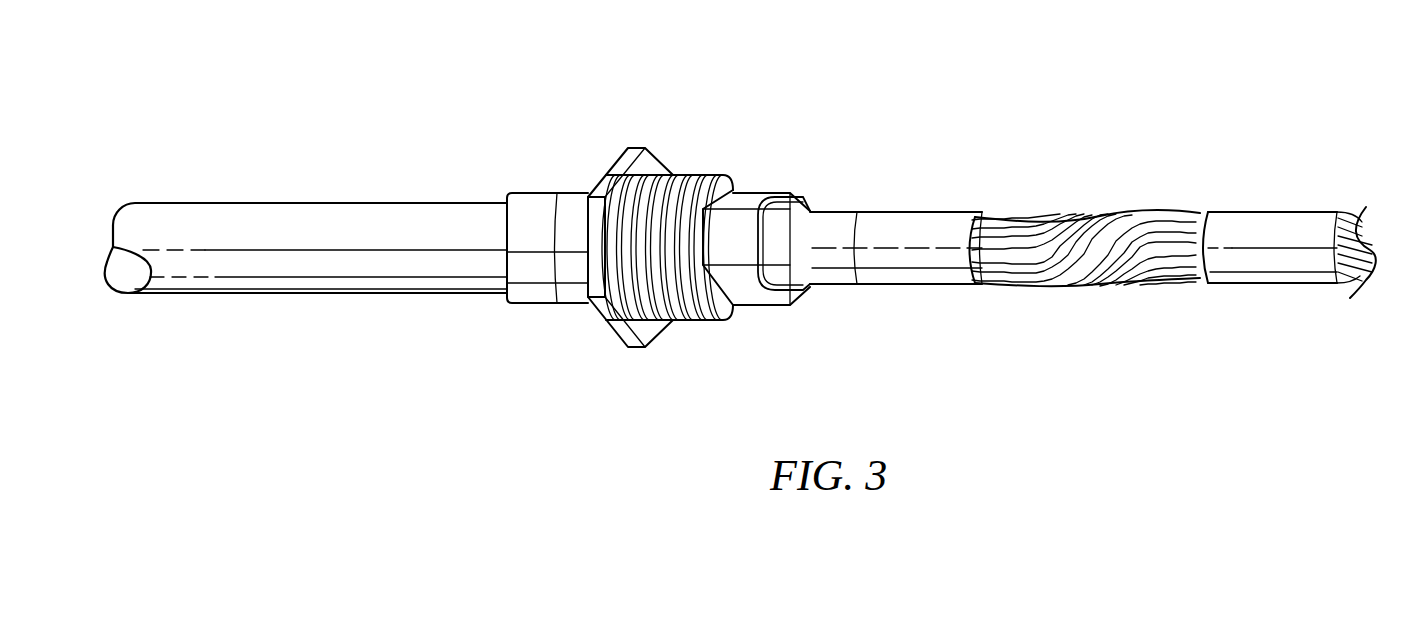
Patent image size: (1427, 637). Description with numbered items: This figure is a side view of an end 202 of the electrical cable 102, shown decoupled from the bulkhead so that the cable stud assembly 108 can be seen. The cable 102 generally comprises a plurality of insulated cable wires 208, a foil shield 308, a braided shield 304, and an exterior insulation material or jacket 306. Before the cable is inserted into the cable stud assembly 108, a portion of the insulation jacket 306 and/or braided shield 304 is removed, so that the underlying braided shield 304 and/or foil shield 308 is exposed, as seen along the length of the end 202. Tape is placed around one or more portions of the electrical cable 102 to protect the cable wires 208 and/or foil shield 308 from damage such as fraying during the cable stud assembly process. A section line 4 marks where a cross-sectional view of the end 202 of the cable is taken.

The cross-sectional view 4 is at (267, 200).
The electrical cable 102 is at (306, 252).
The cable stud assembly 108 is at (676, 158).
The end of the electrical cable 202 is at (695, 199).
The insulated cable wires 208 is at (1140, 208).
The braided shield 304 is at (813, 201).
The exterior insulation material 306 is at (386, 297).
The foil shield 308 is at (938, 260).